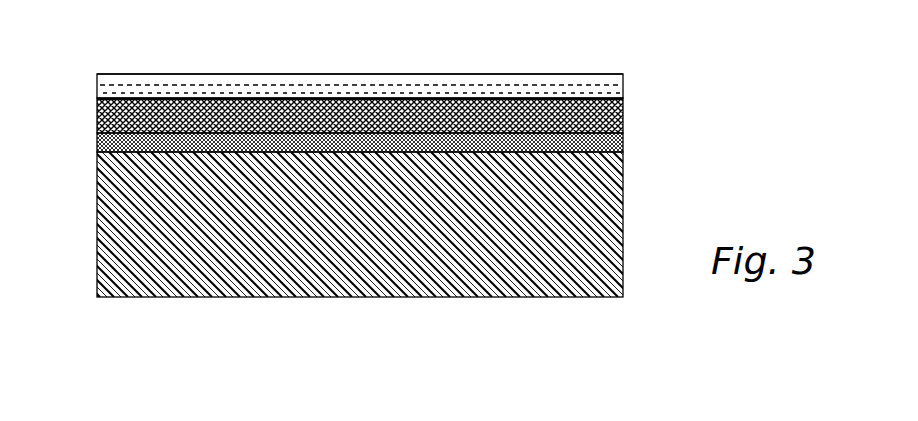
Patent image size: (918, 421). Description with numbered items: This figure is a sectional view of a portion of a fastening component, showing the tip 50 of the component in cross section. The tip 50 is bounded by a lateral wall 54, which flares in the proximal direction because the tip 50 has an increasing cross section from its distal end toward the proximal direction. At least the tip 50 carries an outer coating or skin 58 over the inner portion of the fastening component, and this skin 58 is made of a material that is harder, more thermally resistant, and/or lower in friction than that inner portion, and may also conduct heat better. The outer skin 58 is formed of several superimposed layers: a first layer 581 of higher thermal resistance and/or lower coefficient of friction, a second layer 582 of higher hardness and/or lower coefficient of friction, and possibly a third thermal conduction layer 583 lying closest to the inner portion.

The tip 50 is at (623, 210).
The lateral wall 54 is at (517, 73).
The outer skin 58 is at (370, 114).
The first layer 581 is at (623, 89).
The second layer 582 is at (623, 120).
The third thermal conduction layer 583 is at (623, 147).